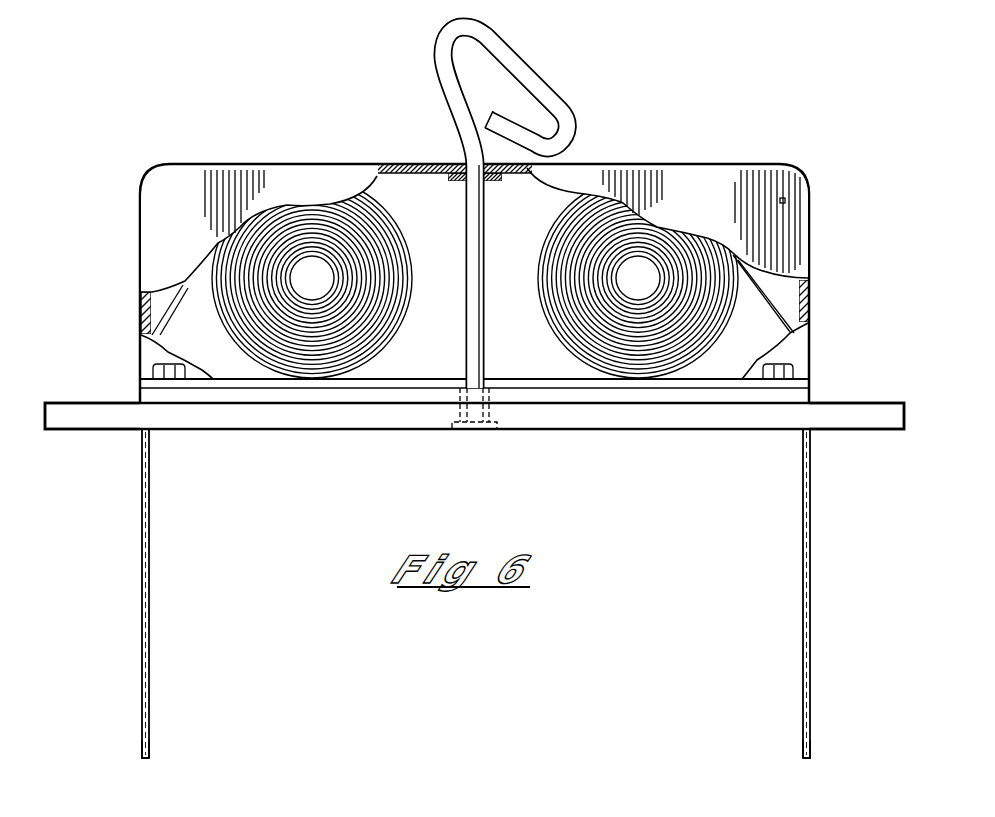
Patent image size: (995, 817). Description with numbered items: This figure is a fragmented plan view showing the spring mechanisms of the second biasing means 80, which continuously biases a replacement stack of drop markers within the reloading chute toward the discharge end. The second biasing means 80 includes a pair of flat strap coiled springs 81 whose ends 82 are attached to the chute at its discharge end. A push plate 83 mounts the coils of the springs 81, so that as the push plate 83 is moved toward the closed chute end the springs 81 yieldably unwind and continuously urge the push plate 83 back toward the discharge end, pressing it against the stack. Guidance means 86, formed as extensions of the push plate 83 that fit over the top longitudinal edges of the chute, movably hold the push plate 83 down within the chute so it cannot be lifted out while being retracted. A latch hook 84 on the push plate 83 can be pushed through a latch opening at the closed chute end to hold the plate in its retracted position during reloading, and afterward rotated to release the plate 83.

The second biasing means 80 is at (692, 148).
The flat strap coiled springs 81 is at (149, 577).
The spring ends 82 is at (149, 733).
The push plate 83 is at (590, 430).
The latch hook 84 is at (573, 125).
The guidance means 86 is at (93, 413).